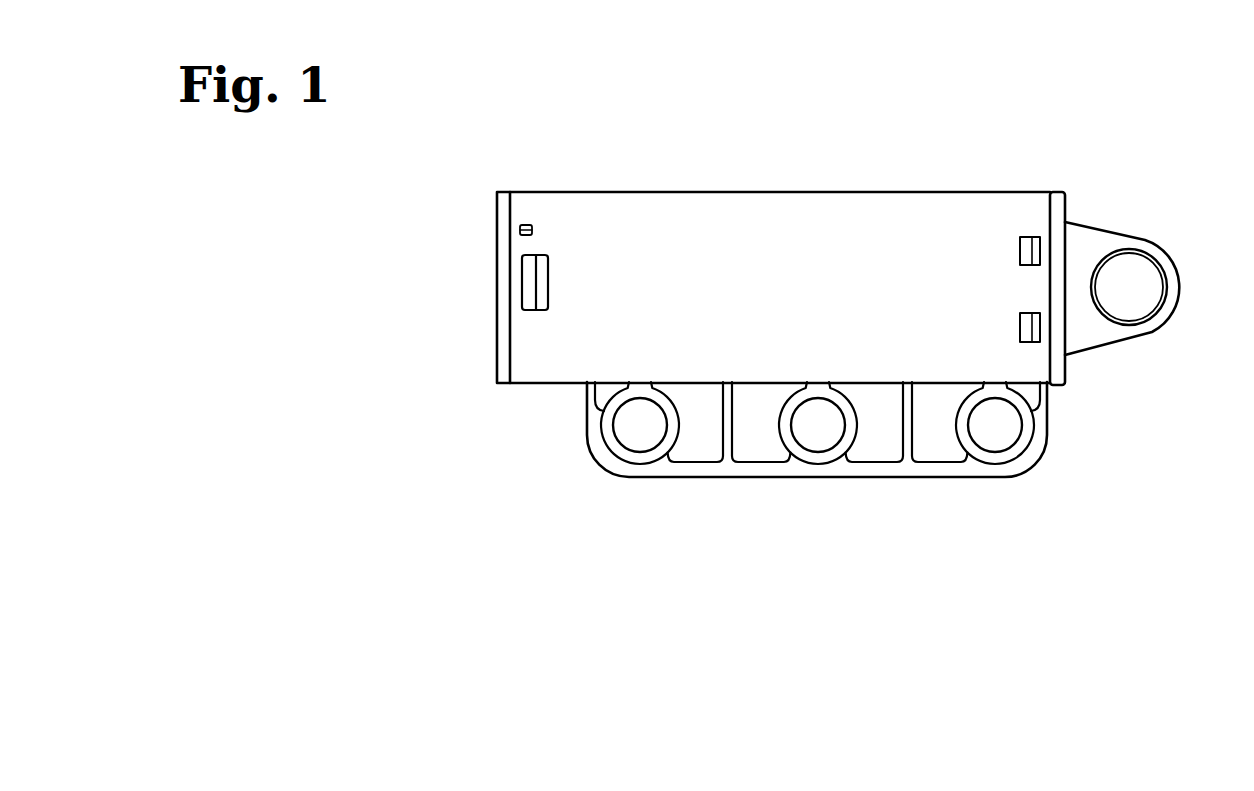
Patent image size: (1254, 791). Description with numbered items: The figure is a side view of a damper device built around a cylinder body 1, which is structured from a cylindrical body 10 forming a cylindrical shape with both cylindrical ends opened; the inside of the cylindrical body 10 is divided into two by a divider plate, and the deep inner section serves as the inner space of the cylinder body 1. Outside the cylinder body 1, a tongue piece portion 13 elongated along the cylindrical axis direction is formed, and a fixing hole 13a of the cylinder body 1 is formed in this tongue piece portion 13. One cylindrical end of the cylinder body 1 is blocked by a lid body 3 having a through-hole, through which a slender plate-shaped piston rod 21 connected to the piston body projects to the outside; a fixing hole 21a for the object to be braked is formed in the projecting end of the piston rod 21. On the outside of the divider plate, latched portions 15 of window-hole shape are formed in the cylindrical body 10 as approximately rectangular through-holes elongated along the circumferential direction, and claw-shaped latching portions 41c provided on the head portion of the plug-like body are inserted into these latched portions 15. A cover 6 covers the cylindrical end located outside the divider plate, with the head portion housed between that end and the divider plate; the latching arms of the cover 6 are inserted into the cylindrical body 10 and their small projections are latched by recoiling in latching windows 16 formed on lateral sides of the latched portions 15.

The cylinder body 1 is at (635, 207).
The cylindrical body 10 is at (750, 207).
The cover 6 is at (498, 237).
The lid body 3 is at (1057, 195).
The latching windows 16 is at (527, 222).
The latched portions 15 is at (545, 257).
The latching portions 41c is at (527, 285).
The piston rod 21 is at (1093, 240).
The fixing hole 21a is at (1143, 280).
The tongue piece portion 13 is at (752, 447).
The fixing hole 13a is at (642, 438).